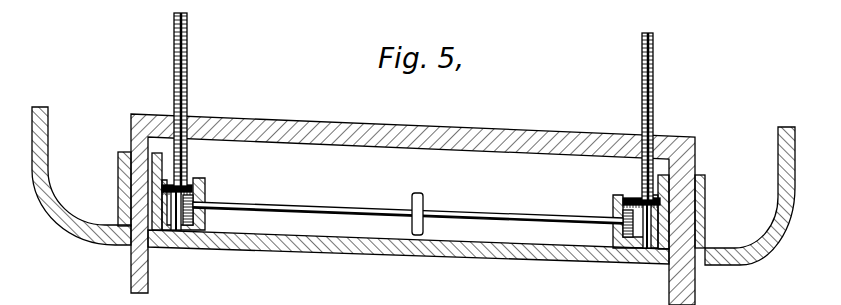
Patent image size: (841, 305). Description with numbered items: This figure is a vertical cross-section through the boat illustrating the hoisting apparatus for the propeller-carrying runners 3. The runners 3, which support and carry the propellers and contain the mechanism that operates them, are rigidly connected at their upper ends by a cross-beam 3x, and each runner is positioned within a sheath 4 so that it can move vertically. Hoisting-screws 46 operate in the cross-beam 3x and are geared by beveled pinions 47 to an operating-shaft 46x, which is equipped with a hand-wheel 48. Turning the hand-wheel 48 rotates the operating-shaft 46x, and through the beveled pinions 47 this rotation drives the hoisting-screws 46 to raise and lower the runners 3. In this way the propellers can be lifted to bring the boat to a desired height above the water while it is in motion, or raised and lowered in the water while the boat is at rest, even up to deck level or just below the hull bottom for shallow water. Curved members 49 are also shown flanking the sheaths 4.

The runner 3 is at (413, 203).
The cross-beam 3x is at (486, 127).
The sheath 4 is at (124, 152).
The hoisting-screw 46 is at (188, 38).
The operating-shaft 46x is at (310, 209).
The beveled pinion 47 is at (200, 181).
The hand-wheel 48 is at (424, 204).
The curved hook arm 49 is at (42, 107).